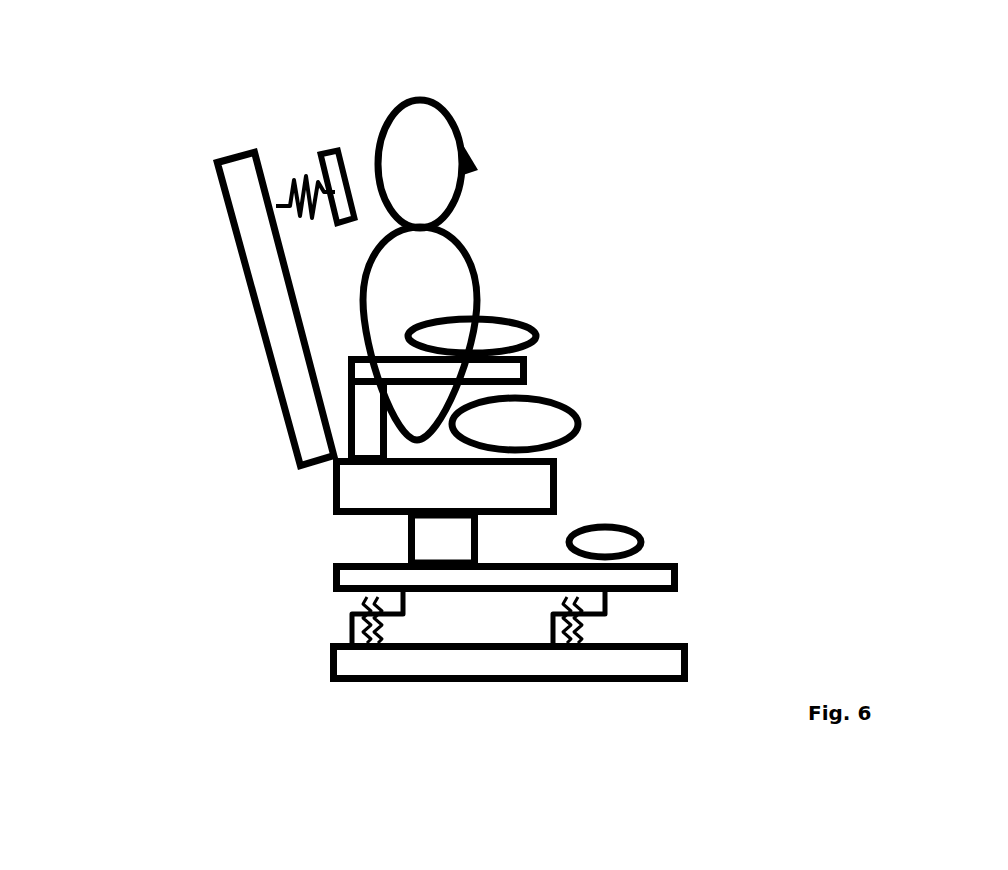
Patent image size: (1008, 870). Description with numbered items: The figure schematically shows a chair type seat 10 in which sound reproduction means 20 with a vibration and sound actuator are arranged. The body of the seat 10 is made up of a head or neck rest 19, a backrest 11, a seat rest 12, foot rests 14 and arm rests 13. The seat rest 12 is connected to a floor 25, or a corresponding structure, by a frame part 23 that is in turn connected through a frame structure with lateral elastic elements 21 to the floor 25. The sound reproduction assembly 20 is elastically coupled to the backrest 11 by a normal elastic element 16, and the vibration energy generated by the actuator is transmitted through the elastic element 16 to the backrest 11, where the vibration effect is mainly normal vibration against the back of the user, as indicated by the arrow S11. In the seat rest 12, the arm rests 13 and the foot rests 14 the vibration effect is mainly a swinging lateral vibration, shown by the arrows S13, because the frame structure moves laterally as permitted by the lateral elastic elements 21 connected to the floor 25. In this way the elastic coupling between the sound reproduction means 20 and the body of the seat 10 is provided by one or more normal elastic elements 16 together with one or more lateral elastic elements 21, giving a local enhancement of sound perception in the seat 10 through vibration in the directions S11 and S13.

The seat 10 is at (187, 258).
The backrest 11 is at (270, 327).
The seat rest 12 is at (337, 487).
The arm rests 13 is at (533, 347).
The foot rests 14 is at (678, 580).
The normal elastic element 16 is at (297, 177).
The head or neck rest 19 is at (322, 147).
The sound reproduction means 20 is at (445, 655).
The lateral elastic elements 21 is at (340, 616).
The frame part 23 is at (442, 543).
The floor 25 is at (653, 684).
The arrow indicating normal vibration S11 is at (237, 138).
The arrows indicating swinging lateral vibration S13 is at (290, 569).